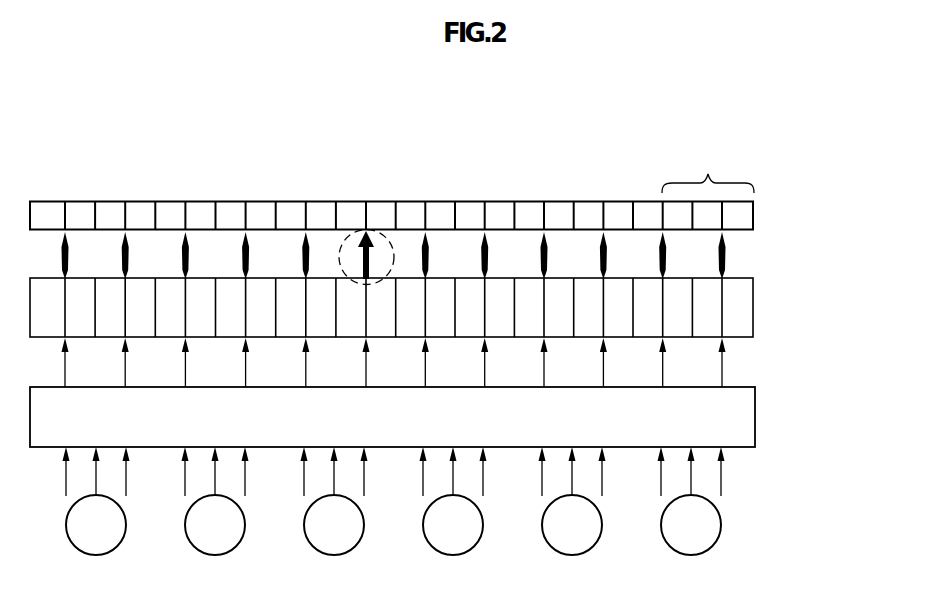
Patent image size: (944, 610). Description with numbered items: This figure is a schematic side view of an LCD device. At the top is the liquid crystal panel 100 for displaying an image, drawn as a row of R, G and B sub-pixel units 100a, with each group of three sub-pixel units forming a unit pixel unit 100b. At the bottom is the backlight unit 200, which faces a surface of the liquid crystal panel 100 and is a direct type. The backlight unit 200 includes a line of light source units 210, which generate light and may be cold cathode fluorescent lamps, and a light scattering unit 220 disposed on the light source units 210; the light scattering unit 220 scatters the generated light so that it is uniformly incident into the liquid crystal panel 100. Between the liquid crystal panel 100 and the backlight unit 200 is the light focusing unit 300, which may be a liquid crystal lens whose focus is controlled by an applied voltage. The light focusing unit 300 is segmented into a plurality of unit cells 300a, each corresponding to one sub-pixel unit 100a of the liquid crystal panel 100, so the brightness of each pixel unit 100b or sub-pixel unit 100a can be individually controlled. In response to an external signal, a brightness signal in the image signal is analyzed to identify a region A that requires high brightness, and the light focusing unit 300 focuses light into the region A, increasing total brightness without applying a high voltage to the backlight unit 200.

The liquid crystal panel 100 is at (466, 219).
The sub-pixel unit 100a is at (754, 212).
The unit pixel unit 100b is at (708, 171).
The light focusing unit 300 is at (466, 265).
The unit cell 300a is at (754, 306).
The backlight unit 200 is at (473, 446).
The light scattering unit 220 is at (756, 413).
The light source unit 210 is at (720, 517).
The region A is at (370, 208).